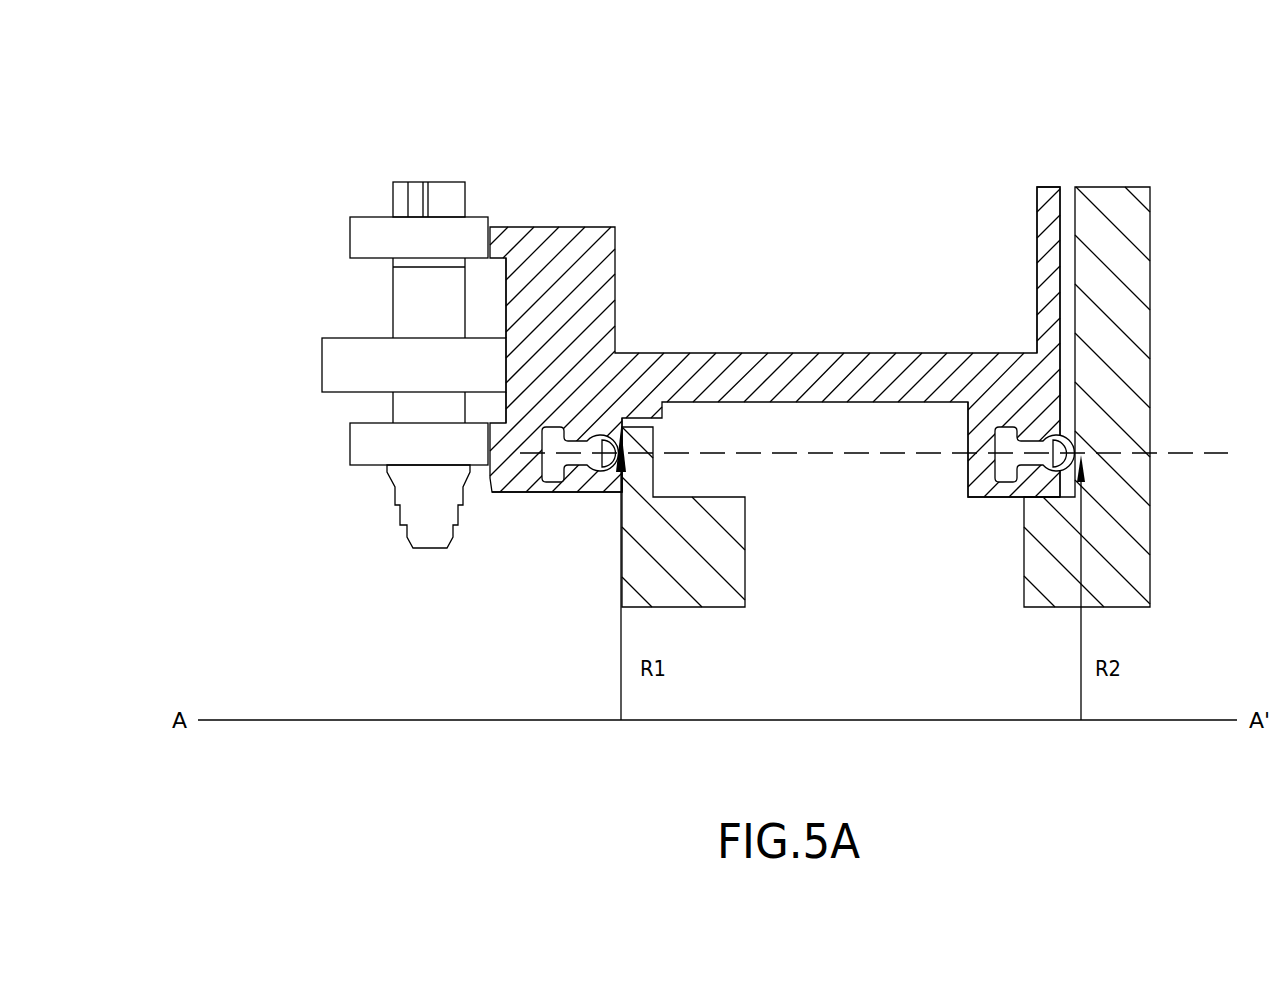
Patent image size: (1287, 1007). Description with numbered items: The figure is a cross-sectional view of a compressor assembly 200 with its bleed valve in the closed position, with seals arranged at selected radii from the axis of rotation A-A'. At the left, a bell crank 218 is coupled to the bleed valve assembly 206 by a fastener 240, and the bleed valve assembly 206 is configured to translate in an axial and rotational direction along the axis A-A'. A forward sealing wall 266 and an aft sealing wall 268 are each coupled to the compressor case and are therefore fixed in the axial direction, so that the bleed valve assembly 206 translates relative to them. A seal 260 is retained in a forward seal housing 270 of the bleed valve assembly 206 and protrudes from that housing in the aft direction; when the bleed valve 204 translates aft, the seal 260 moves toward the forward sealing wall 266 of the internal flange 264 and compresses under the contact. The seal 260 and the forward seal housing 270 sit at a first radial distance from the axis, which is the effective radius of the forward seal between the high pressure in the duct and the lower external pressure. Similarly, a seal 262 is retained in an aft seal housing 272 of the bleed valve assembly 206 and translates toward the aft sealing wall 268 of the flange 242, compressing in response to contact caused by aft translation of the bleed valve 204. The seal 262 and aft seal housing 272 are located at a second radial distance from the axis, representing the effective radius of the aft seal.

The compressor assembly 200 is at (370, 121).
The bleed valve 204 is at (1040, 187).
The bleed valve assembly 206 is at (601, 227).
The bell crank 218 is at (330, 340).
The fastener 240 is at (441, 191).
The flange 242 is at (1128, 187).
The seal 260 is at (553, 427).
The seal 262 is at (1003, 427).
The internal flange 264 is at (655, 432).
The forward sealing wall 266 is at (606, 430).
The aft sealing wall 268 is at (1077, 441).
The forward seal housing 270 is at (583, 493).
The aft seal housing 272 is at (978, 496).